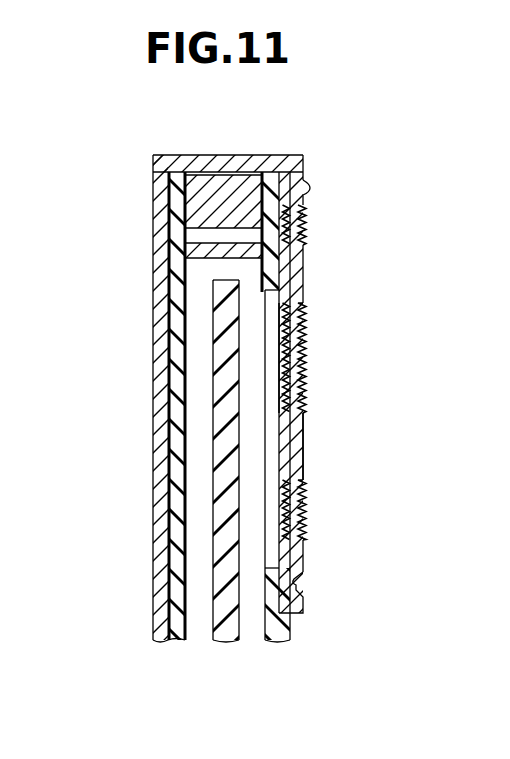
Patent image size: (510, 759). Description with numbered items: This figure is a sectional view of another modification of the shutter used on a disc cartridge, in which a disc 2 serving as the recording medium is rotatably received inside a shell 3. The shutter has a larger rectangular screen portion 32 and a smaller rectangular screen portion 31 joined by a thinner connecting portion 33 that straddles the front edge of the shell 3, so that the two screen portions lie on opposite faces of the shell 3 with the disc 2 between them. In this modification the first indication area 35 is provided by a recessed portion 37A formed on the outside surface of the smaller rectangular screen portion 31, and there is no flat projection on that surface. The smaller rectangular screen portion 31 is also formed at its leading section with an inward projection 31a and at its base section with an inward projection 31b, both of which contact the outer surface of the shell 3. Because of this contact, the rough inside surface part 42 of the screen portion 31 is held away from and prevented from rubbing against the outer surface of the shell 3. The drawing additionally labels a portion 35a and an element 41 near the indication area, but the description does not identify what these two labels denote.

The disc 2 is at (216, 418).
The shell 3 is at (166, 305).
The smaller rectangular screen portion 31 is at (255, 396).
The inward projection 31a is at (300, 583).
The inward projection 31b is at (304, 192).
The larger rectangular screen portion 32 is at (153, 174).
The thinner connecting portion 33 is at (228, 155).
The first indication area 35 is at (255, 400).
The cylindrical portion 35a is at (303, 452).
The recessed portion 37A is at (305, 326).
The male thread 41 is at (306, 231).
The rough inside surface part 42 is at (298, 247).